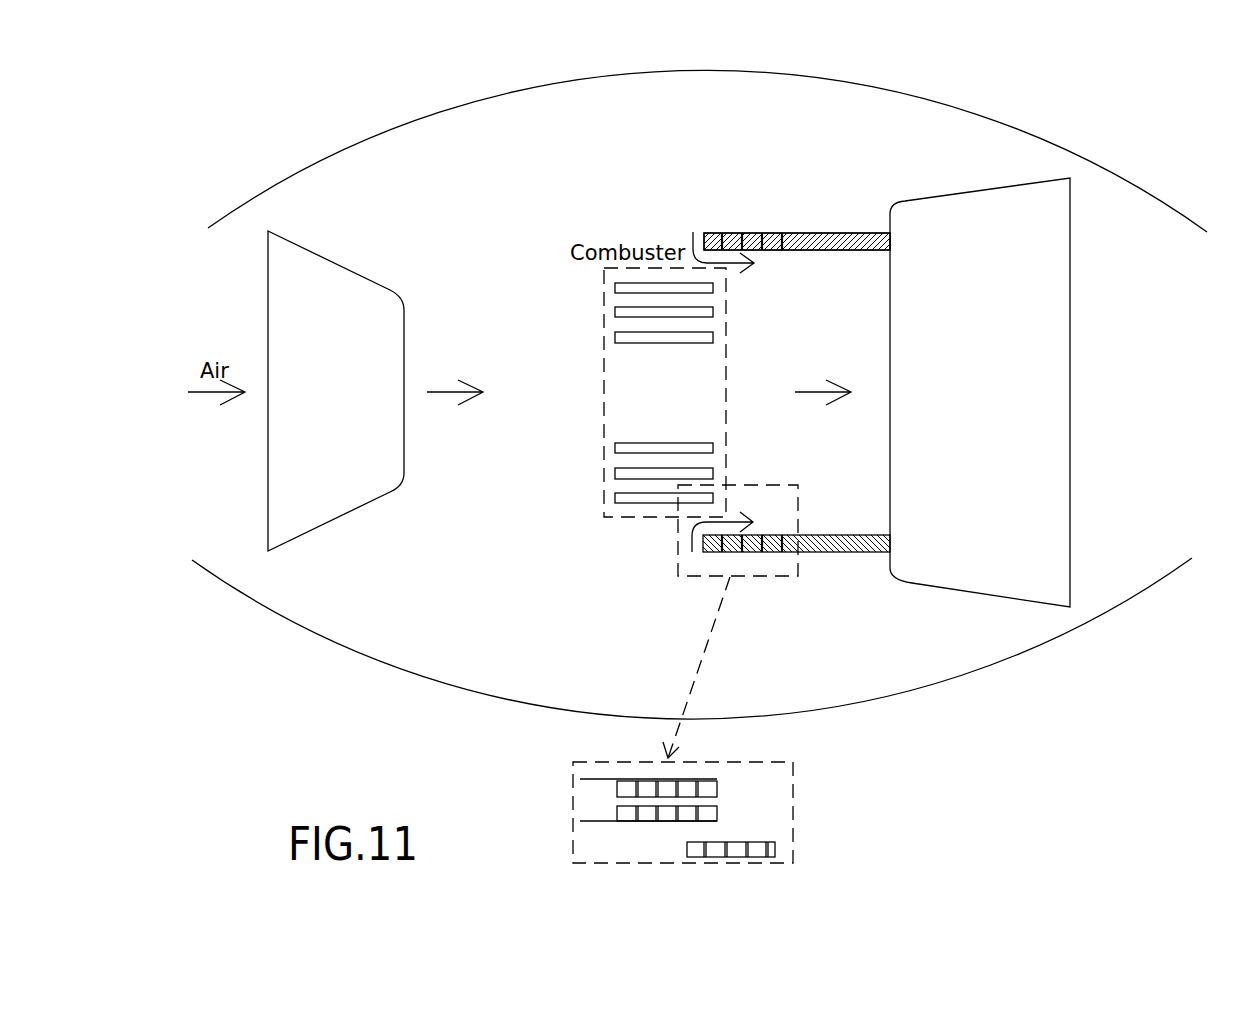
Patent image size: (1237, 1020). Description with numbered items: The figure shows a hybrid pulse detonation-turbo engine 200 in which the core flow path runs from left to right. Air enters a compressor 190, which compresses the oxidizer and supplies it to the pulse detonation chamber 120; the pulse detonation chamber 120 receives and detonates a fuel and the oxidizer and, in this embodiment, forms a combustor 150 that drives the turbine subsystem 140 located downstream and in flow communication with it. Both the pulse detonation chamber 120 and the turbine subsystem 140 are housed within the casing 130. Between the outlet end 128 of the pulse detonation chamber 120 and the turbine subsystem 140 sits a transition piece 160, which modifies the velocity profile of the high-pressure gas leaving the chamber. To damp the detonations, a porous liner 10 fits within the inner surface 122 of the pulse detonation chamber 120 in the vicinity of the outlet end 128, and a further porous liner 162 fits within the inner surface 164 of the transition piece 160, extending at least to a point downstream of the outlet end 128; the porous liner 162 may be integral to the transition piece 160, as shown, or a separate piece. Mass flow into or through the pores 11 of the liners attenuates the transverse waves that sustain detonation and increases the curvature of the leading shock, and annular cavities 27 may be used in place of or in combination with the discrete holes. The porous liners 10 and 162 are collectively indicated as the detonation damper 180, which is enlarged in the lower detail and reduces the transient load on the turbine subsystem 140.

The engine 200 is at (1137, 90).
The compressor 190 is at (315, 292).
The casing 130 is at (1065, 633).
The turbine subsystem 140 is at (1022, 305).
The outlet end 128 is at (725, 342).
The combustor 150 is at (609, 507).
The pulse detonation chamber 120 is at (635, 497).
The transition piece 160 is at (853, 232).
The inner surface of the transition piece 164 is at (826, 233).
The porous liner 162 is at (733, 233).
The detonation damper 180 is at (787, 562).
The inner surface of the pulse detonation chamber 122 is at (597, 780).
The porous liner 10 is at (705, 788).
The pores 11 is at (691, 772).
The annular cavities 27 is at (678, 792).